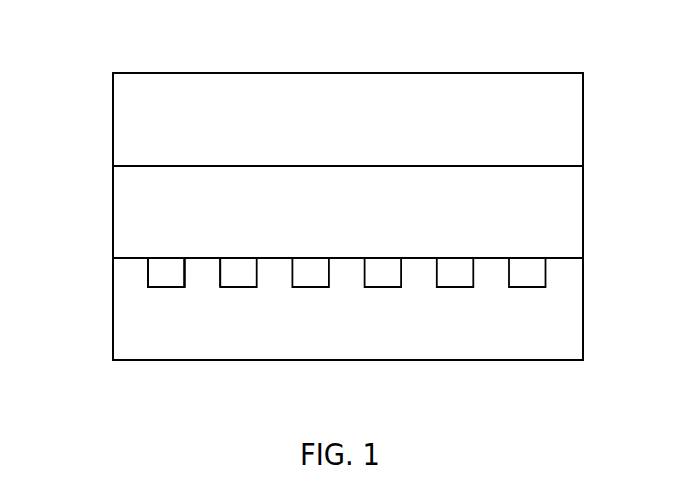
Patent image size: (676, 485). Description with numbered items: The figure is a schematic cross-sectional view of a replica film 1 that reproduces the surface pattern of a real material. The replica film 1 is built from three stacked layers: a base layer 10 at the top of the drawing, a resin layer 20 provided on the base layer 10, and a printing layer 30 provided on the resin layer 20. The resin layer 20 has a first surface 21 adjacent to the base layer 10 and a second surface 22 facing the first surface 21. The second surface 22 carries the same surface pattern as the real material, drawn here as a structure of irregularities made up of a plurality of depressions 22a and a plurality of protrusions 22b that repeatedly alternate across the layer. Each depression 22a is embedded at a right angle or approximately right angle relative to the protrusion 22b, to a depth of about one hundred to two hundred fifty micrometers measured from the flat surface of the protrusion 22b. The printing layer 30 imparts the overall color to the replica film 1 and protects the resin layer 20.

The replica film 1 is at (138, 42).
The base layer 10 is at (583, 119).
The resin layer 20 is at (583, 208).
The printing layer 30 is at (583, 318).
The first surface 21 is at (113, 166).
The second surface 22 is at (113, 258).
The depression 22a is at (163, 287).
The protrusion 22b is at (202, 258).